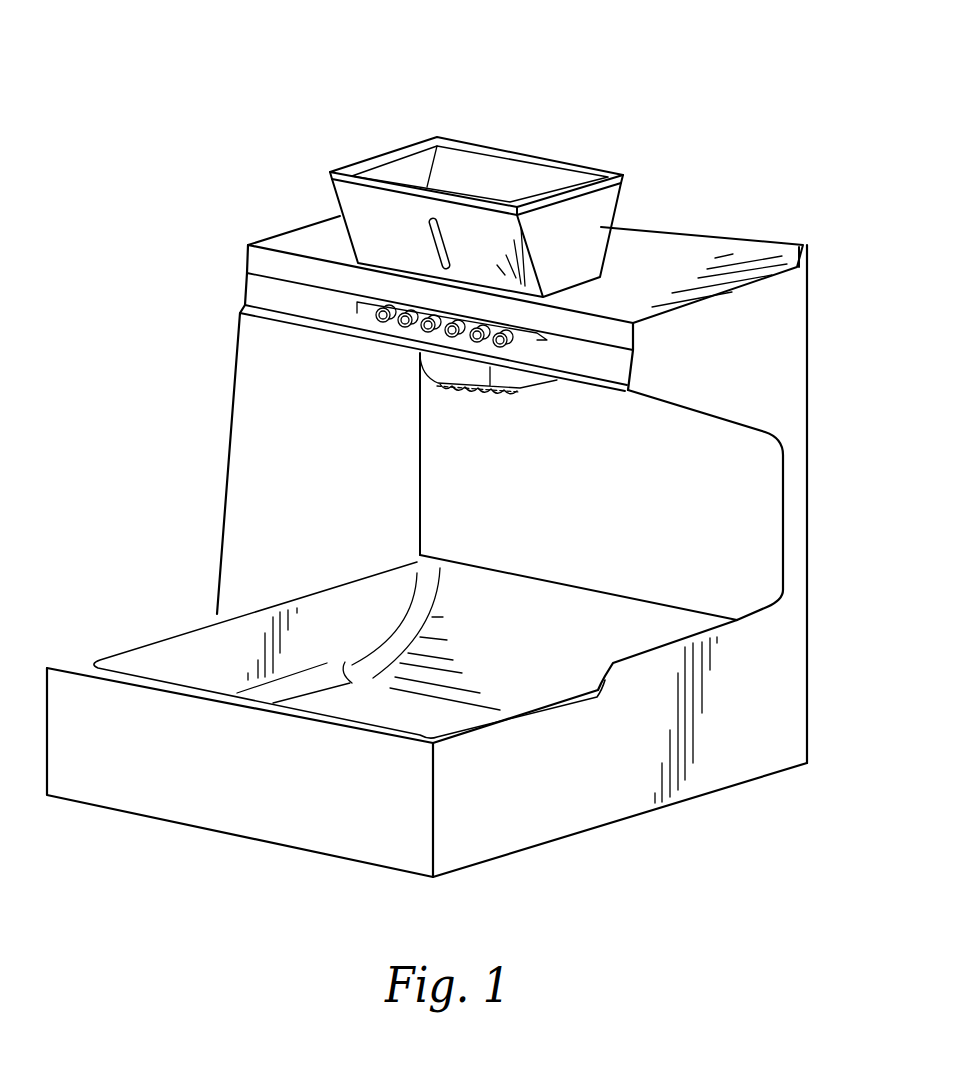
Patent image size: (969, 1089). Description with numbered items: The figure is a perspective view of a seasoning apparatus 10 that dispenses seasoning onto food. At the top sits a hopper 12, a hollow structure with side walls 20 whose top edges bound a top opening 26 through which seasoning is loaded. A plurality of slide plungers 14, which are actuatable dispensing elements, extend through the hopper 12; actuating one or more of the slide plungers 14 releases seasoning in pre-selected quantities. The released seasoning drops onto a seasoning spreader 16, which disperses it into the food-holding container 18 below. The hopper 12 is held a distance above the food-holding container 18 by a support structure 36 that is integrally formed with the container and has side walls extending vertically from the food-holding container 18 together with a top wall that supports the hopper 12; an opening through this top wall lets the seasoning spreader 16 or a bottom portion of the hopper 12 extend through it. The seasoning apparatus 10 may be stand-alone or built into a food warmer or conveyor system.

The seasoning apparatus 10 is at (371, 88).
The hopper 12 is at (555, 162).
The slide plungers 14 is at (378, 318).
The seasoning spreader 16 is at (434, 459).
The food-holding container 18 is at (548, 815).
The side walls 20 is at (597, 205).
The top opening 26 is at (468, 117).
The support structure 36 is at (252, 452).